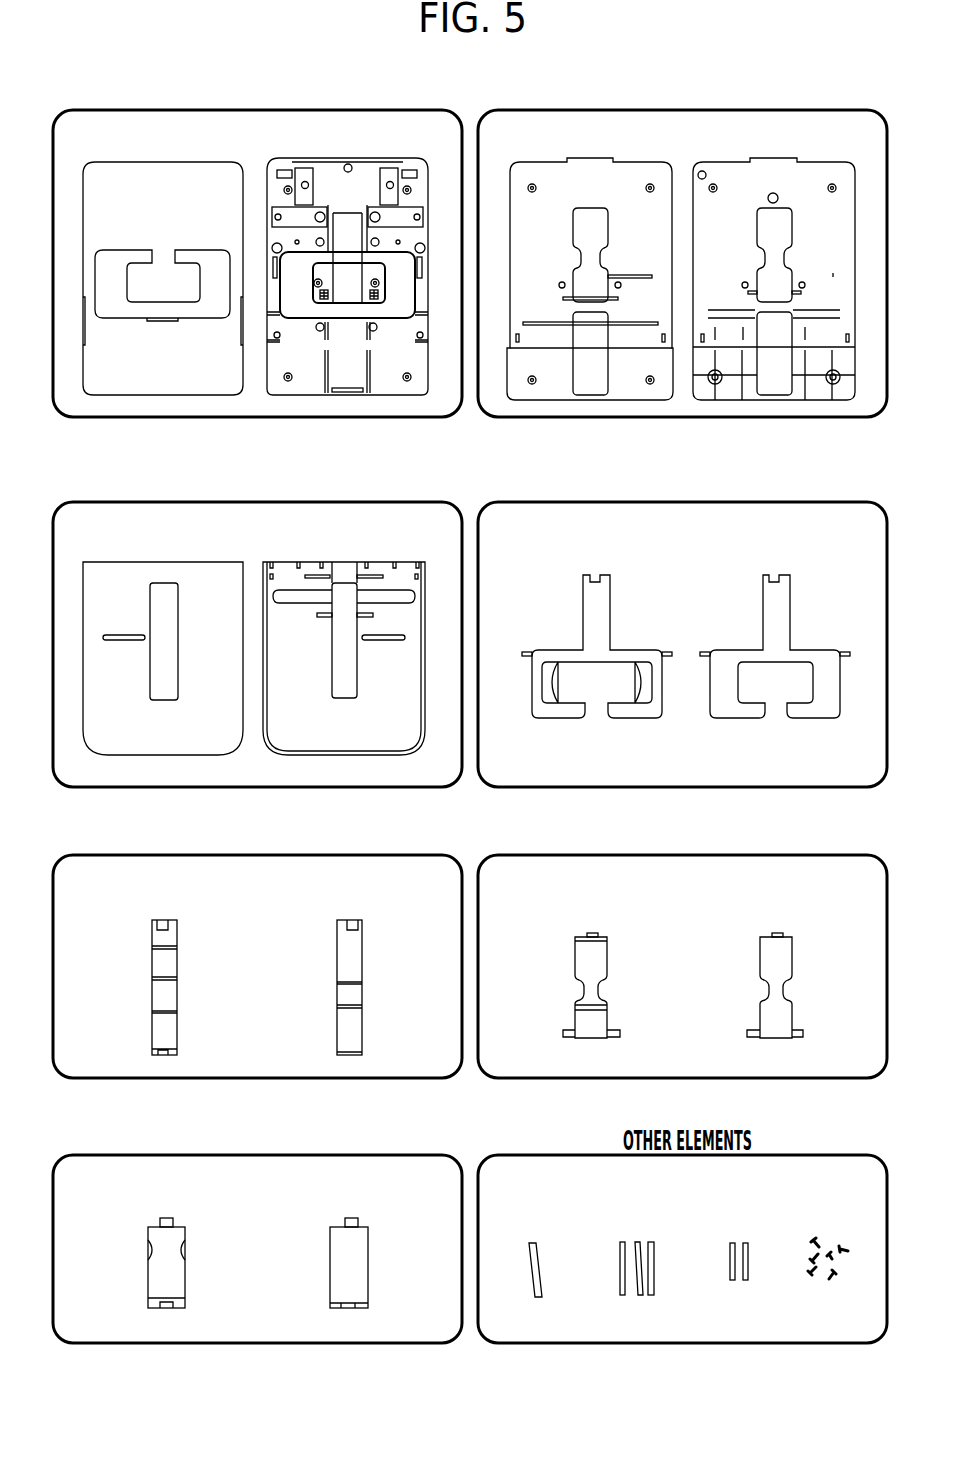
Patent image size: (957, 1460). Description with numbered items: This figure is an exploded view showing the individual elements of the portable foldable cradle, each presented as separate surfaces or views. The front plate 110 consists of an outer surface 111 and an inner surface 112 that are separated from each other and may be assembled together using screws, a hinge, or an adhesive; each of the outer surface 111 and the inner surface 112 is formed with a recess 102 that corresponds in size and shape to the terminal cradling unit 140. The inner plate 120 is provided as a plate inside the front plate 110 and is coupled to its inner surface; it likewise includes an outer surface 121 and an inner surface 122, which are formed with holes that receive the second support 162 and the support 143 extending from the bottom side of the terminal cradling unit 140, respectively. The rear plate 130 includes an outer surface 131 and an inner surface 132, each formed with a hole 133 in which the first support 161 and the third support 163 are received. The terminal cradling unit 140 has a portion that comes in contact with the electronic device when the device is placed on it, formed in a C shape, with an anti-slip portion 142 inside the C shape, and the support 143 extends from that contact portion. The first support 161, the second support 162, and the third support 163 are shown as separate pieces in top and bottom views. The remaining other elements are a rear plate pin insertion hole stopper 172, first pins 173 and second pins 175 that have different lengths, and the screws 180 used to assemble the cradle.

The recess 102 is at (216, 302).
The front plate 110 is at (257, 267).
The outer surface 111 is at (162, 256).
The inner surface 112 is at (346, 256).
The inner plate 120 is at (682, 247).
The outer surface 121 is at (591, 259).
The inner surface 122 is at (774, 259).
The rear plate 130 is at (257, 645).
The outer surface 131 is at (164, 631).
The inner surface 132 is at (346, 631).
The hole 133 is at (343, 690).
The terminal cradling unit 140 is at (682, 627).
The anti-slip portion 142 is at (642, 678).
The support 143 is at (805, 571).
The first support 161 is at (352, 997).
The second support 162 is at (780, 965).
The third support 163 is at (350, 1282).
The rear plate pin insertion hole stopper 172 is at (533, 1240).
The first pins 173 is at (663, 1232).
The second pins 175 is at (765, 1232).
The screws 180 is at (857, 1232).